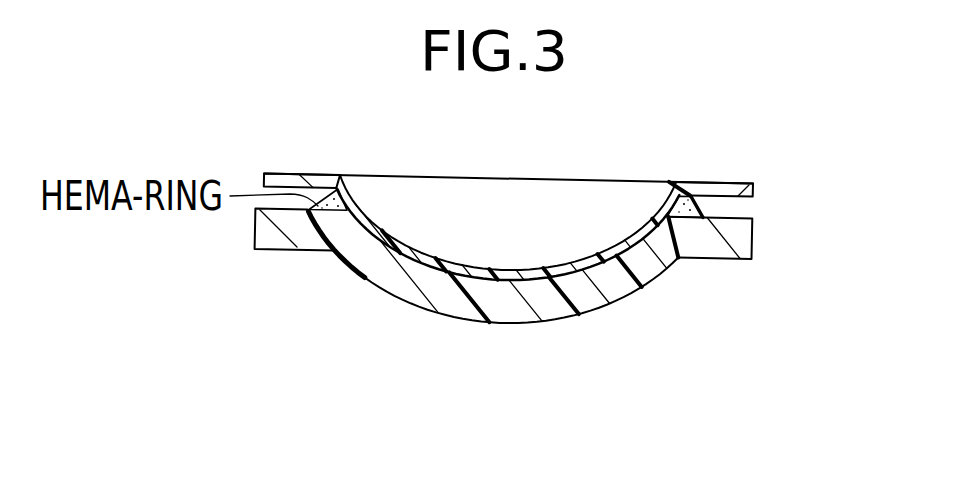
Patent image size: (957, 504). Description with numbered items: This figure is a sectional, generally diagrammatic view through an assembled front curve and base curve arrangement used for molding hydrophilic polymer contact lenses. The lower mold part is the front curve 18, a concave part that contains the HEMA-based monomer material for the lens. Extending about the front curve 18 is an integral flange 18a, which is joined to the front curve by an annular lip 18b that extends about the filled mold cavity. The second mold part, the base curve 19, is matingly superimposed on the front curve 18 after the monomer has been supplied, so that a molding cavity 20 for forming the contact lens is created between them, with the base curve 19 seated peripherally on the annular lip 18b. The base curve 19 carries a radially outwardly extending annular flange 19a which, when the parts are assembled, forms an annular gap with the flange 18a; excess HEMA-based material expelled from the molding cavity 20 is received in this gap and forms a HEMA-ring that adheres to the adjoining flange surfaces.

The front curve 18 is at (522, 323).
The integral flange 18a is at (736, 218).
The annular lip 18b is at (675, 270).
The base curve 19 is at (537, 266).
The annular flange 19a is at (733, 181).
The molding cavity 20 is at (420, 265).